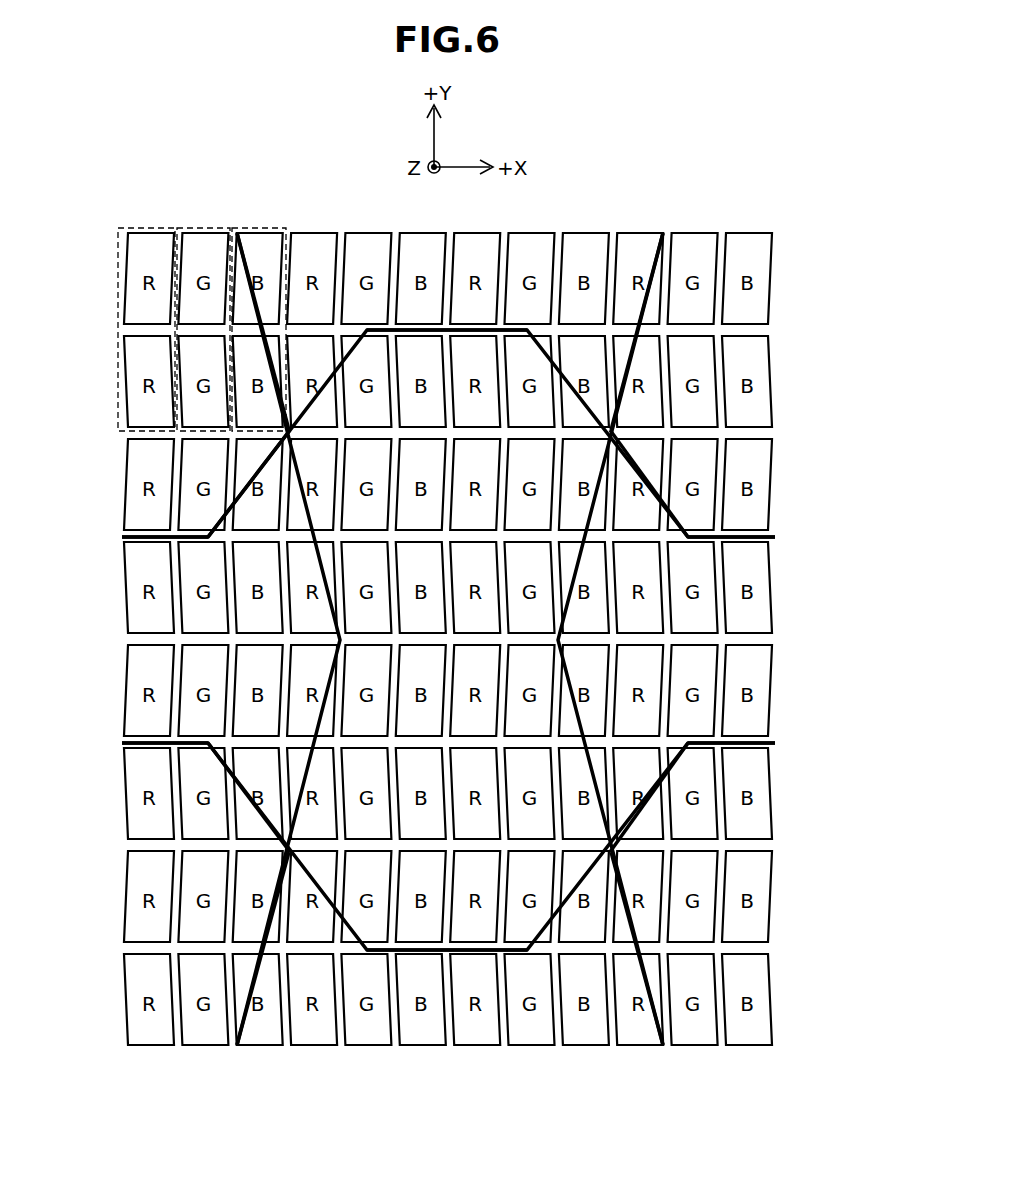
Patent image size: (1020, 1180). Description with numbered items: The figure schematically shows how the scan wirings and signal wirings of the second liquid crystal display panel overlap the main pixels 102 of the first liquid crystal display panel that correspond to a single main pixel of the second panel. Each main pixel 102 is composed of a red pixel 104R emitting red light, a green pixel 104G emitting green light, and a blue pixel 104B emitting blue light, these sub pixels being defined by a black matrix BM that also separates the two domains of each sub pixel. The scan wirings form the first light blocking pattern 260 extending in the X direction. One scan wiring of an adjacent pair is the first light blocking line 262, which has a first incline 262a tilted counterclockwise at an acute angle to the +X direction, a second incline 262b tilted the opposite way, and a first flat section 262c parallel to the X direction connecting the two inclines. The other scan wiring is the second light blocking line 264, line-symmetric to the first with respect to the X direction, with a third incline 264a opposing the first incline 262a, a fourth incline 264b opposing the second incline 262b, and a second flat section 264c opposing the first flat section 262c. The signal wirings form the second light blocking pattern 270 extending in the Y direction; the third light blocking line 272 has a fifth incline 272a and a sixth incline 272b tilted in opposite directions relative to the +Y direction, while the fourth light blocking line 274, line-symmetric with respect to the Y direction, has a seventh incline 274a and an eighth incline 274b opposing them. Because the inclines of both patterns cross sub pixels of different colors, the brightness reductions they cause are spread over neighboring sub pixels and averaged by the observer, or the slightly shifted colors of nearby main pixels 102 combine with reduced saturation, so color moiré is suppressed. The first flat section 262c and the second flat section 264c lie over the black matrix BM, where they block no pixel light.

The main pixel 102 is at (203, 279).
The red pixel 104R is at (136, 224).
The green pixel 104G is at (204, 224).
The blue pixel 104B is at (265, 304).
The black matrix BM is at (140, 331).
The first light blocking pattern 260 is at (476, 643).
The first light blocking line 262 is at (474, 370).
The first incline 262a is at (262, 470).
The second incline 262b is at (640, 472).
The first flat section 262c is at (150, 534).
The second light blocking line 264 is at (476, 890).
The third incline 264a is at (260, 822).
The fourth incline 264b is at (640, 822).
The second flat section 264c is at (150, 741).
The second light blocking pattern 270 is at (451, 671).
The third light blocking line 272 is at (193, 671).
The fifth incline 272a is at (260, 360).
The sixth incline 272b is at (265, 937).
The fourth light blocking line 274 is at (707, 671).
The seventh incline 274a is at (632, 358).
The eighth incline 274b is at (640, 937).